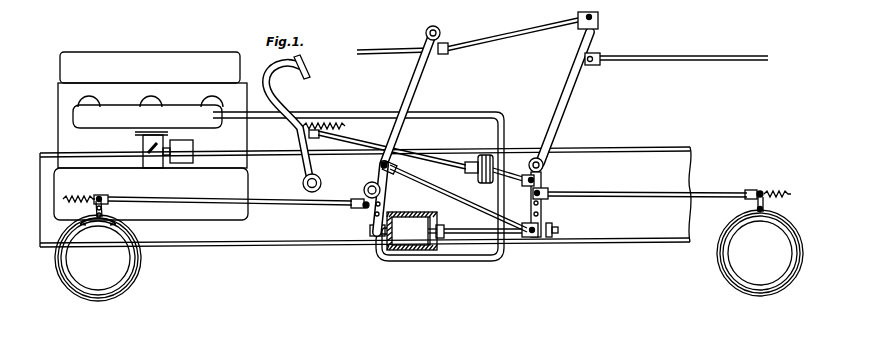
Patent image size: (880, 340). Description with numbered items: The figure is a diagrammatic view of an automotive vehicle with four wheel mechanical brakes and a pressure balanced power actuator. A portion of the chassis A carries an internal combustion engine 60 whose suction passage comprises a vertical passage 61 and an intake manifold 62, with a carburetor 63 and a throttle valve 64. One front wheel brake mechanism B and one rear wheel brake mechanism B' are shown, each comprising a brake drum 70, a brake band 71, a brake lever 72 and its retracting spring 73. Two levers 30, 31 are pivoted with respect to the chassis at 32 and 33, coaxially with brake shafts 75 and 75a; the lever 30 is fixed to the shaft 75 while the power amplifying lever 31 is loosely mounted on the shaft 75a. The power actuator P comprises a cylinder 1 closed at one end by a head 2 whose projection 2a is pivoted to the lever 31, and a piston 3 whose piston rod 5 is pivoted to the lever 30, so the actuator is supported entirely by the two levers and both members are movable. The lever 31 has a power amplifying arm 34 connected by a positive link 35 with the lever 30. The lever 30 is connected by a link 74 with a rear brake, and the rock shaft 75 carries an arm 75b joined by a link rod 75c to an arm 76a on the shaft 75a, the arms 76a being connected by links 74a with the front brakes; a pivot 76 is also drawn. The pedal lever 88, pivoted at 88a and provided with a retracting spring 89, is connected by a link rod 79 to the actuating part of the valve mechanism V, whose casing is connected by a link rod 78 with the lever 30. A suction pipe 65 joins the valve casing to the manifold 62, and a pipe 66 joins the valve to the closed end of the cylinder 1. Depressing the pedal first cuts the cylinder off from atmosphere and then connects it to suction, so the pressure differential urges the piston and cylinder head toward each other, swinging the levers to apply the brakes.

The chassis A is at (602, 158).
The internal combustion engine 60 is at (148, 56).
The intake manifold 62 is at (90, 110).
The vertical passage 61 is at (143, 160).
The throttle valve 64 is at (146, 150).
The carburetor 63 is at (193, 152).
The link 74a is at (316, 207).
The suction pipe 65 is at (481, 112).
The pipe 66 is at (492, 262).
The projection 2a is at (374, 240).
The valve mechanism V is at (488, 155).
The power actuator P is at (412, 222).
The cylinder 1 is at (412, 252).
The head 2 is at (413, 231).
The piston 3 is at (433, 251).
The piston rod 5 is at (473, 228).
The retracting spring 89 is at (333, 131).
The link rod 79 is at (406, 156).
The link rod 78 is at (512, 176).
The pedal lever 88 is at (287, 108).
The pivot 88a is at (303, 182).
The brake shaft 75a is at (407, 99).
The arm 76a is at (441, 40).
The link rod 75c is at (516, 34).
The brake shaft 75 is at (558, 126).
The arm 75b is at (599, 22).
The pivot 76 is at (596, 52).
The link 74 is at (690, 53).
The pivot 32 is at (543, 166).
The lever 30 is at (541, 214).
The positive link 35 is at (445, 187).
The power amplifying arm 34 is at (382, 164).
The pivot 33 is at (364, 189).
The power amplifying lever 31 is at (365, 208).
The brake drum 70 is at (725, 256).
The brake band 71 is at (722, 256).
The rear wheel brake mechanism B' is at (757, 294).
The brake lever 72 is at (756, 202).
The retracting spring 73 is at (777, 185).
The front wheel brake mechanism B is at (98, 268).